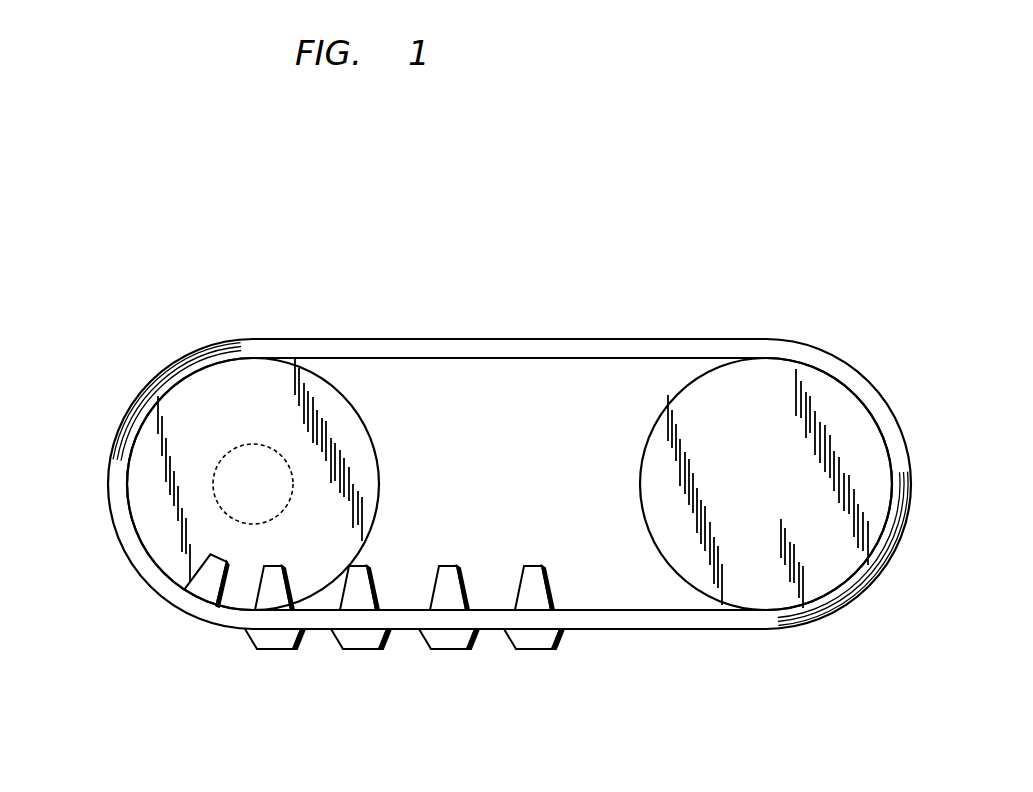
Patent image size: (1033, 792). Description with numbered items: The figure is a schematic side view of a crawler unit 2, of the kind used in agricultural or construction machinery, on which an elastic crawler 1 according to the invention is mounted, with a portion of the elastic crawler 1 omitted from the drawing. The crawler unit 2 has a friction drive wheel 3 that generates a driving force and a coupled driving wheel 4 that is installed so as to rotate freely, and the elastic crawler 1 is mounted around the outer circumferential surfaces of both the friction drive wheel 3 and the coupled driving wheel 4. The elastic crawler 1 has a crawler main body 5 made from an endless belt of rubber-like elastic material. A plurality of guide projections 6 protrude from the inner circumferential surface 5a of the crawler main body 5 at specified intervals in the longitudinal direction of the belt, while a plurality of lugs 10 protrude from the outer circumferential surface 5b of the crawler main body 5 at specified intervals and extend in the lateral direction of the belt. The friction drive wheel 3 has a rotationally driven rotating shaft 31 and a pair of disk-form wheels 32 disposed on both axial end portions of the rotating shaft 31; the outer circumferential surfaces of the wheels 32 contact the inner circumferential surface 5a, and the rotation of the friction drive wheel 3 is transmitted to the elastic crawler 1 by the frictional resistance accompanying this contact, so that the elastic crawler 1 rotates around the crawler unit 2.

The elastic crawler 1 is at (658, 347).
The crawler unit 2 is at (513, 287).
The friction drive wheel 3 is at (275, 395).
The coupled driving wheel 4 is at (817, 437).
The crawler main body 5 is at (625, 620).
The inner circumferential surface 5a is at (582, 610).
The outer circumferential surface 5b is at (692, 630).
The guide projection 6 is at (543, 564).
The lug 10 is at (532, 640).
The rotating shaft 31 is at (218, 507).
The disk-form wheel 32 is at (172, 440).